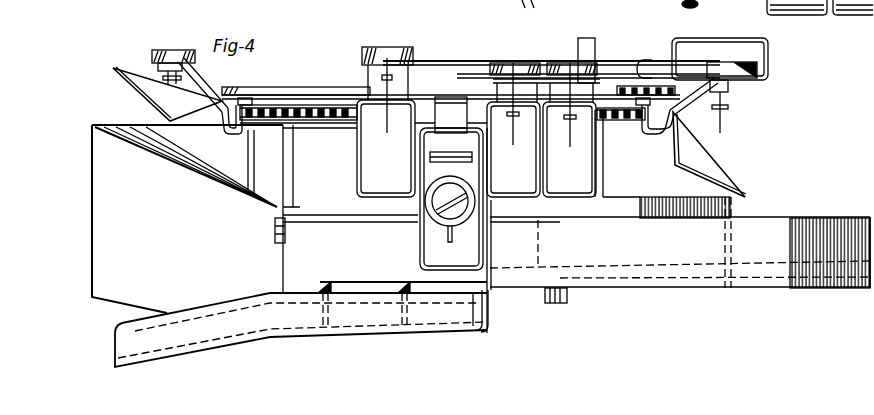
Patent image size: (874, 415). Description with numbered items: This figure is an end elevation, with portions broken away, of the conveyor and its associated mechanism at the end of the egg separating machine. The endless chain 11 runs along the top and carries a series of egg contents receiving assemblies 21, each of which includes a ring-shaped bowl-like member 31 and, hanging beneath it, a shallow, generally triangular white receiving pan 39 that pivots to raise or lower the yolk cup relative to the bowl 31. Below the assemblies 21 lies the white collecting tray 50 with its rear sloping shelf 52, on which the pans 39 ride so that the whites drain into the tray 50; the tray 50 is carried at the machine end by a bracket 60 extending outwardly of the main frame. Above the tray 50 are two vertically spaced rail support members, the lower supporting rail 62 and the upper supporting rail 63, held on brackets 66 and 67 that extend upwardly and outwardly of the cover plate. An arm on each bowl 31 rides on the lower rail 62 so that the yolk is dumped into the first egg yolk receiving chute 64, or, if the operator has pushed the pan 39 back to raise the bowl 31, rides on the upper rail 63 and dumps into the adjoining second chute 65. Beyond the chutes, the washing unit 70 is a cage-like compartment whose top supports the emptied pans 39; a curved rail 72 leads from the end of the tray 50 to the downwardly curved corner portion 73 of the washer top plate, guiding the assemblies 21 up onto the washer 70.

The endless chain 11 is at (330, 122).
The egg contents receiving assembly 21 is at (136, 58).
The bowl-like member 31 is at (187, 50).
The white receiving pan 39 is at (114, 70).
The white collecting tray 50 is at (640, 280).
The rear sloping shelf 52 is at (593, 217).
The bracket 60 is at (563, 303).
The lower supporting rail 62 is at (457, 76).
The upper supporting rail 63 is at (626, 50).
The egg yolk receiving chute 64 is at (463, 285).
The egg yolk receiving chute 65 is at (362, 287).
The bracket 66 is at (697, 38).
The bracket 67 is at (588, 38).
The washing unit 70 is at (95, 200).
The curved rail 72 is at (335, 216).
The downwardly curved corner portion 73 is at (123, 125).